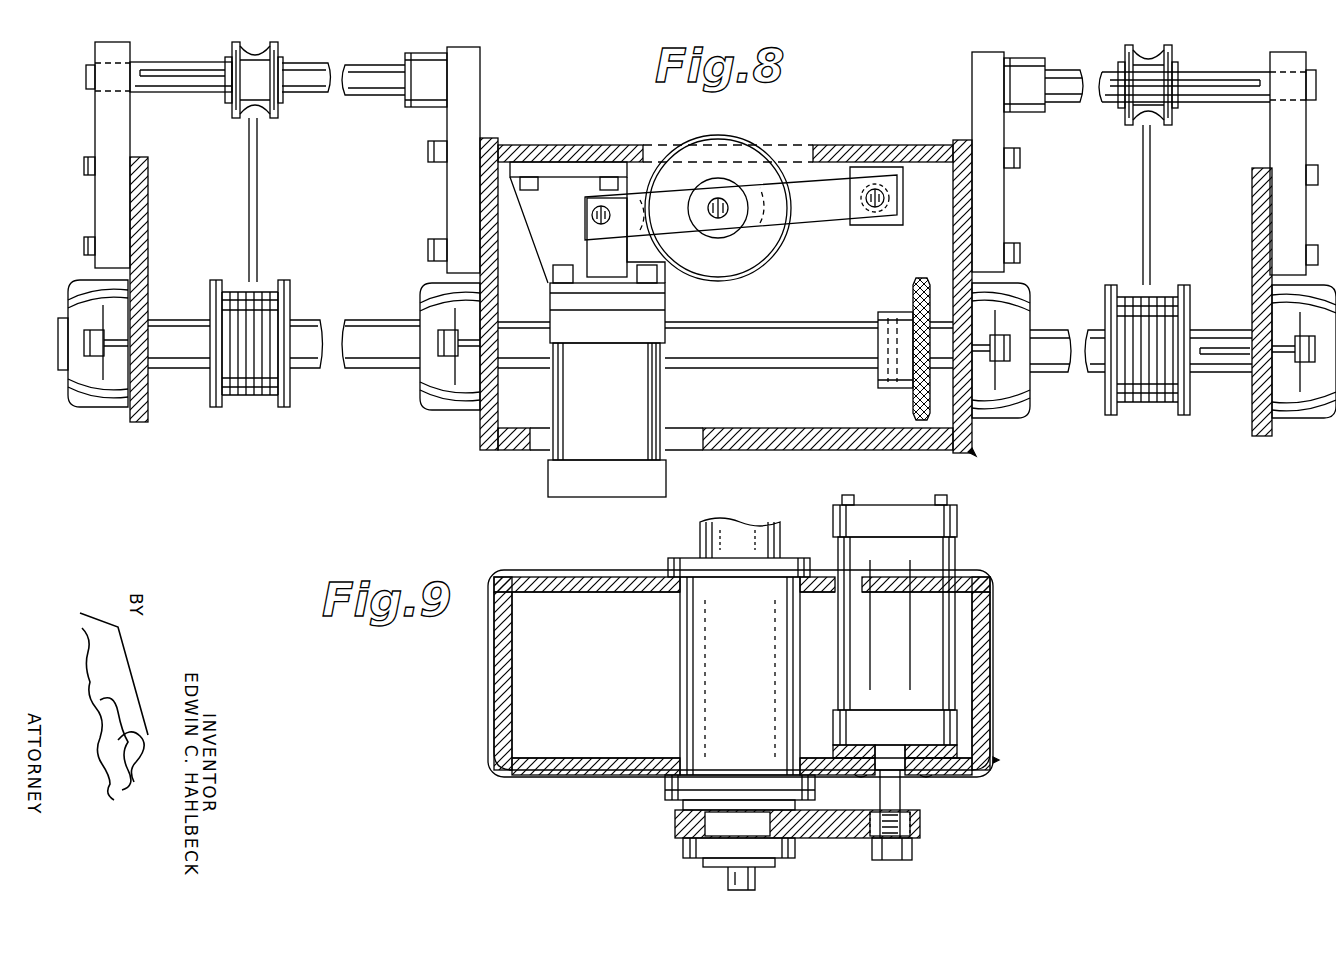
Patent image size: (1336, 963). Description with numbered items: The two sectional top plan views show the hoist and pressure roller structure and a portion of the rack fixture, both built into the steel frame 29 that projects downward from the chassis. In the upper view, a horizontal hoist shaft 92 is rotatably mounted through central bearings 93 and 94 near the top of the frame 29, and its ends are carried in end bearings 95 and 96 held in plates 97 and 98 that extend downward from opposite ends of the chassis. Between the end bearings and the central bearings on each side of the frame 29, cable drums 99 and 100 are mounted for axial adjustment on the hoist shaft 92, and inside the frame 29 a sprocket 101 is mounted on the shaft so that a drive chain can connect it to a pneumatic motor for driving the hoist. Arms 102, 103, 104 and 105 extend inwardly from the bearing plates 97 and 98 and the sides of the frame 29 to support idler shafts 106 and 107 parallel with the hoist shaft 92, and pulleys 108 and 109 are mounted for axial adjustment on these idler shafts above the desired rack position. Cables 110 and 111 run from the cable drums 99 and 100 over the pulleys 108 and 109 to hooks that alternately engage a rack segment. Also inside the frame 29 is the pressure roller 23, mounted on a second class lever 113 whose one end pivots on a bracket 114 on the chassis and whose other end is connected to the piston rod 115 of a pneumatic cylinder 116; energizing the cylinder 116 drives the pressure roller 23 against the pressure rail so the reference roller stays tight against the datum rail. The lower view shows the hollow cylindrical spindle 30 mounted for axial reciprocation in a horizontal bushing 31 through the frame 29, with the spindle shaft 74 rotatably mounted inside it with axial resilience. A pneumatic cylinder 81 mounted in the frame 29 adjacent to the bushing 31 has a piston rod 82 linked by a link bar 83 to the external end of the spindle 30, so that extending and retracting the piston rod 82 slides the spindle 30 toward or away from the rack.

In FIG. 8, the pressure roller 23 is at (730, 136).
In FIG. 8, the frame 29 is at (975, 454).
In FIG. 9, the frame 29 is at (999, 760).
In FIG. 9, the spindle 30 is at (696, 538).
In FIG. 9, the bushing 31 is at (740, 684).
In FIG. 9, the spindle shaft 74 is at (728, 878).
In FIG. 9, the pneumatic cylinder 81 is at (955, 545).
In FIG. 9, the piston rod 82 is at (895, 795).
In FIG. 9, the link bar 83 is at (920, 822).
In FIG. 8, the hoist shaft 92 is at (382, 370).
In FIG. 8, the bearing 93 is at (455, 412).
In FIG. 8, the bearing 94 is at (1015, 420).
In FIG. 8, the bearing 95 is at (98, 405).
In FIG. 8, the bearing 96 is at (1300, 425).
In FIG. 8, the plate 97 is at (137, 424).
In FIG. 8, the plate 98 is at (1253, 440).
In FIG. 8, the cable drum 99 is at (290, 400).
In FIG. 8, the cable drum 100 is at (1185, 418).
In FIG. 8, the sprocket 101 is at (913, 292).
In FIG. 8, the arm 102 is at (130, 118).
In FIG. 8, the arm 103 is at (447, 120).
In FIG. 8, the arm 104 is at (1005, 125).
In FIG. 8, the arm 105 is at (1270, 124).
In FIG. 8, the idler shaft 106 is at (207, 63).
In FIG. 8, the idler shaft 107 is at (1249, 71).
In FIG. 8, the pulley 108 is at (280, 112).
In FIG. 8, the pulley 109 is at (1125, 120).
In FIG. 8, the cable 110 is at (259, 215).
In FIG. 8, the cable 111 is at (1152, 205).
In FIG. 8, the second class lever 113 is at (808, 195).
In FIG. 8, the bracket 114 is at (907, 222).
In FIG. 8, the piston rod 115 is at (587, 250).
In FIG. 8, the pneumatic cylinder 116 is at (607, 390).